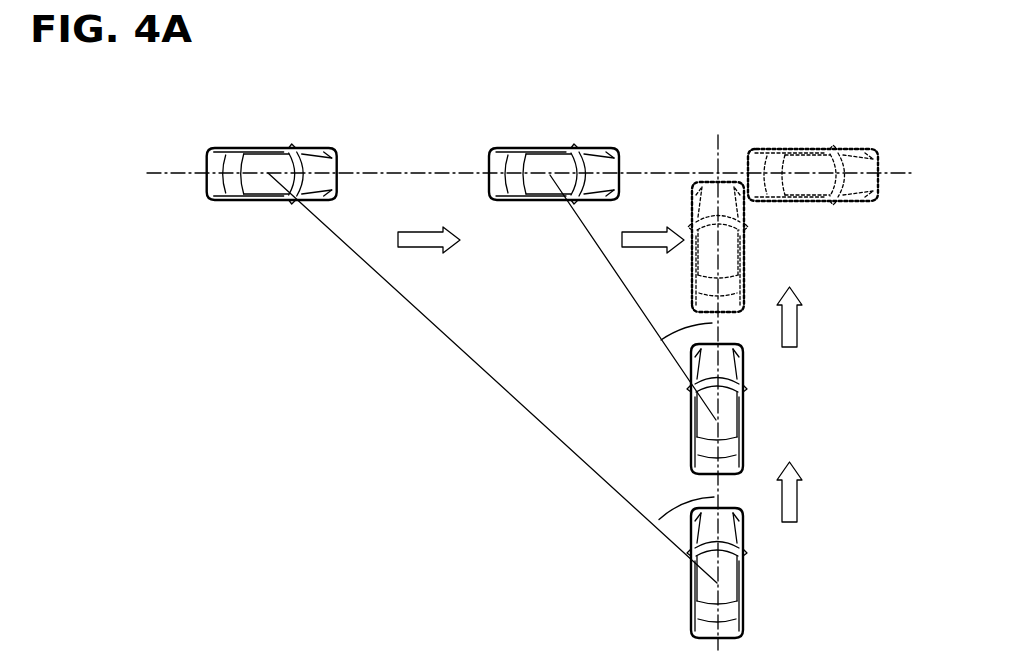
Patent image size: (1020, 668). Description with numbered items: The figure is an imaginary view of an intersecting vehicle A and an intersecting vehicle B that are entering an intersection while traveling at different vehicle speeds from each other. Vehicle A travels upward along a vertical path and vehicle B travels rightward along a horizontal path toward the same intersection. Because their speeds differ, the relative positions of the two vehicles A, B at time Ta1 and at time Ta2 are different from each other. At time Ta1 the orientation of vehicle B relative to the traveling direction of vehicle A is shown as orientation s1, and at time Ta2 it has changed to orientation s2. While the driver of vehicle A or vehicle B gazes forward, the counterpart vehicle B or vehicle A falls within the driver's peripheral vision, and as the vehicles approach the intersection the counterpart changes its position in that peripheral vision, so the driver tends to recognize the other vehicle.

The intersecting vehicle A is at (690, 580).
The intersecting vehicle B is at (338, 160).
The time Ta1 is at (507, 379).
The time Ta2 is at (649, 309).
The orientation S1 s1 is at (684, 502).
The orientation S2 s2 is at (690, 322).